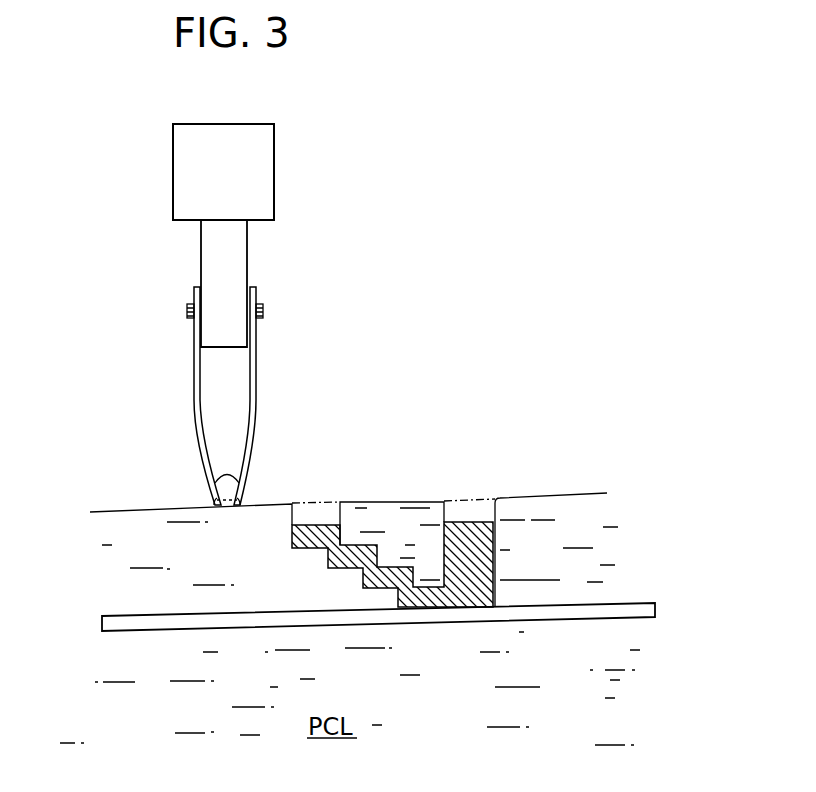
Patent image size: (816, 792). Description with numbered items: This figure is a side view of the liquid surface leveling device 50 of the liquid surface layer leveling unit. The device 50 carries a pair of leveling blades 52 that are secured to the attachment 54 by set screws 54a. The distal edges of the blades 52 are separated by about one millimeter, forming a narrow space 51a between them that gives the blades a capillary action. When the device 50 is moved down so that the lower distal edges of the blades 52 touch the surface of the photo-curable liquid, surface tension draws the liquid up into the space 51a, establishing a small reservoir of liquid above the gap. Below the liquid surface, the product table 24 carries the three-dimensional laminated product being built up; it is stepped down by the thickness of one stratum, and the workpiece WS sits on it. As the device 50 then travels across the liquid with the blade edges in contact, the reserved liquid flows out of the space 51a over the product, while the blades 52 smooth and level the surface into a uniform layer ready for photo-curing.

The liquid surface leveling device 50 is at (277, 209).
The attachment 54 is at (250, 242).
The set screws 54a is at (187, 313).
The leveling blades 52 is at (193, 385).
The space 51a is at (233, 466).
The workpiece WS is at (480, 497).
The product table 24 is at (648, 601).